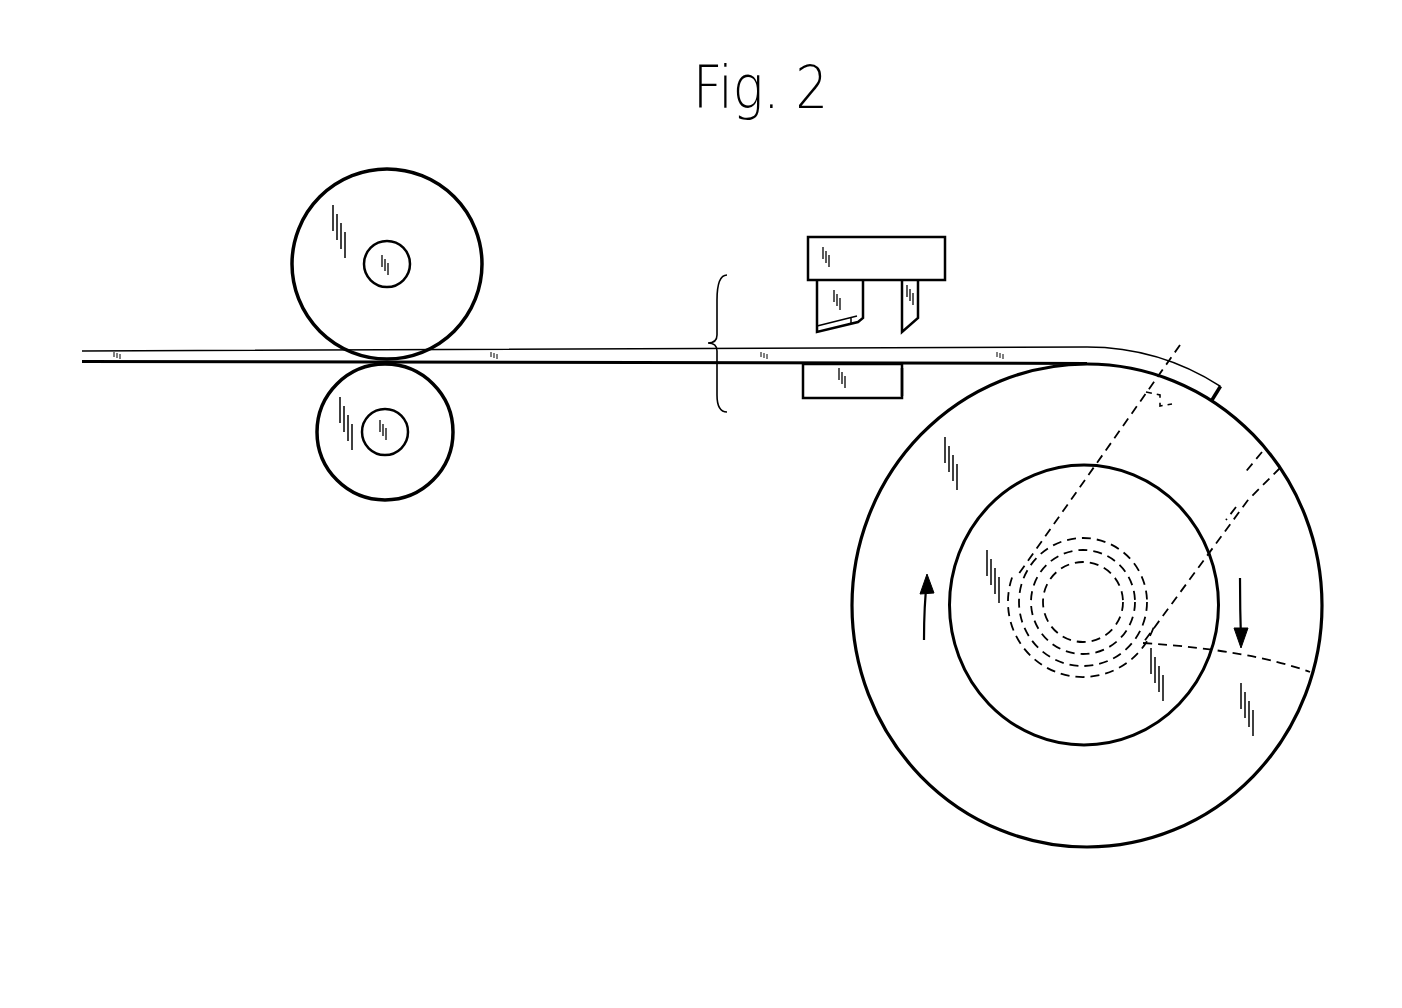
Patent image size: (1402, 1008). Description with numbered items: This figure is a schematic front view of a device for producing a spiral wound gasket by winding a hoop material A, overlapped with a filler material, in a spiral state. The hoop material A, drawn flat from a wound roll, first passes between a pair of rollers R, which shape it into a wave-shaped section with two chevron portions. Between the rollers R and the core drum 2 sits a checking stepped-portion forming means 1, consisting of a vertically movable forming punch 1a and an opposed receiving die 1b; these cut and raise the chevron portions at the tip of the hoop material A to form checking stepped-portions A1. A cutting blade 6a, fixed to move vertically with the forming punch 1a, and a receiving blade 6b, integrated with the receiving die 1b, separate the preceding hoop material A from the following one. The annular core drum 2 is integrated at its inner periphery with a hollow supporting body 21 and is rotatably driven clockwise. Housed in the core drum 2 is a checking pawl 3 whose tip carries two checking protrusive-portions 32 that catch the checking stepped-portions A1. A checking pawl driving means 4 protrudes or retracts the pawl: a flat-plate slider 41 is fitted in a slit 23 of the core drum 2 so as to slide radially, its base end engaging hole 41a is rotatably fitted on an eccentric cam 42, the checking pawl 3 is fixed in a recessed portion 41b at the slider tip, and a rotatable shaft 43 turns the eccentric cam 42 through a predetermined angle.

The rollers R is at (430, 220).
The hoop material A is at (178, 356).
The checking stepped-portion forming means 1 is at (851, 336).
The forming punch 1a is at (824, 296).
The receiving die 1b is at (824, 382).
The cutting blade 6a is at (908, 310).
The receiving blade 6b is at (903, 381).
The core drum 2 is at (1222, 745).
The supporting body 21 is at (1110, 745).
The slit 23 is at (1262, 498).
The checking pawl 3 is at (1152, 420).
The checking protrusive-portion 32 is at (1162, 375).
The checking stepped-portion A1 is at (1180, 375).
The checking pawl driving means 4 is at (1035, 630).
The slider 41 is at (1277, 450).
The engaging hole 41a is at (1310, 672).
The recessed portion 41b is at (1173, 400).
The eccentric cam 42 is at (1097, 545).
The rotatable shaft 43 is at (1035, 650).